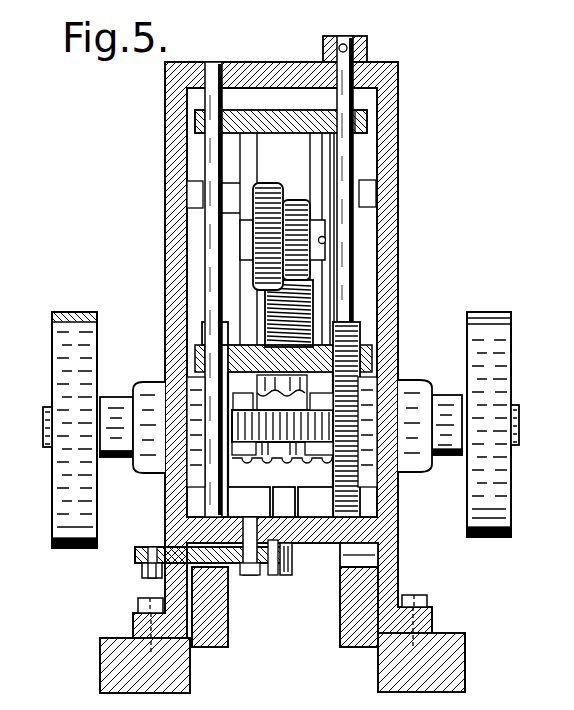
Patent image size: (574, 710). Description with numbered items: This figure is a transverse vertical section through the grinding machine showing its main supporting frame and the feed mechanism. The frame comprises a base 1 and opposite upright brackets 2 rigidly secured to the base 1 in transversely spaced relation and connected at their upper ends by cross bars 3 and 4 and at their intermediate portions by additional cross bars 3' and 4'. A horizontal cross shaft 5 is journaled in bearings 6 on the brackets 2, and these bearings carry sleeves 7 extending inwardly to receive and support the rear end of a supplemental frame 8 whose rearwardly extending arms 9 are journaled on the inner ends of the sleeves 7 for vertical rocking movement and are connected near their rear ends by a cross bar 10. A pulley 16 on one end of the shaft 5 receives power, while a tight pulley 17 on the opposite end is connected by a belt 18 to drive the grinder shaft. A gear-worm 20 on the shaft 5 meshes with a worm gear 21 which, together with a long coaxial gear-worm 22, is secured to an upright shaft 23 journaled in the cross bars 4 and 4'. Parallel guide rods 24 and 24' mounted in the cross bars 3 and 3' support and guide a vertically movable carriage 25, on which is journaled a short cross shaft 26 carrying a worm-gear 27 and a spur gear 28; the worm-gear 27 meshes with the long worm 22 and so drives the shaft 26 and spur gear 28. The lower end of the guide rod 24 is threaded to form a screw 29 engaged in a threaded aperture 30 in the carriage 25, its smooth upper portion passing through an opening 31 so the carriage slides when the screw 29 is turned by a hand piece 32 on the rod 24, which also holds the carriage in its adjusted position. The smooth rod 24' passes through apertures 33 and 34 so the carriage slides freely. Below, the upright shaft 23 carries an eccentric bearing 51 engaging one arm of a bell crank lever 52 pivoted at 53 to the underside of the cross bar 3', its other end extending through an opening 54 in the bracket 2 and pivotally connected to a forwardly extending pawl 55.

The base 1 is at (103, 683).
The upright brackets 2 is at (168, 283).
The cross bar 3 is at (281, 60).
The cross bar 3' is at (282, 545).
The cross bar 4 is at (254, 239).
The cross bar 4' is at (256, 444).
The cross shaft 5 is at (43, 428).
The bearings 6 is at (136, 470).
The sleeves 7 is at (117, 400).
The supplemental frame 8 is at (348, 620).
The arms 9 is at (213, 647).
The cross bar 10 is at (330, 498).
The pulley 16 is at (492, 312).
The tight pulley 17 is at (60, 350).
The belt 18 is at (80, 312).
The gear-worm 20 is at (252, 456).
The worm gear 21 is at (320, 456).
The gear-worm 22 is at (310, 310).
The upright shaft 23 is at (273, 498).
The guide rod 24 is at (382, 179).
The guide rod 24' is at (173, 289).
The carriage 25 is at (258, 142).
The cross shaft 26 is at (326, 236).
The worm-gear 27 is at (265, 200).
The spur gear 28 is at (302, 200).
The screw 29 is at (358, 335).
The threaded aperture 30 is at (372, 353).
The opening 31 is at (367, 119).
The hand piece 32 is at (349, 41).
The aperture 33 is at (200, 356).
The aperture 34 is at (195, 119).
The eccentric bearing 51 is at (291, 566).
The bell crank lever 52 is at (138, 558).
The pivot 53 is at (250, 576).
The opening 54 is at (168, 547).
The pawl 55 is at (145, 573).